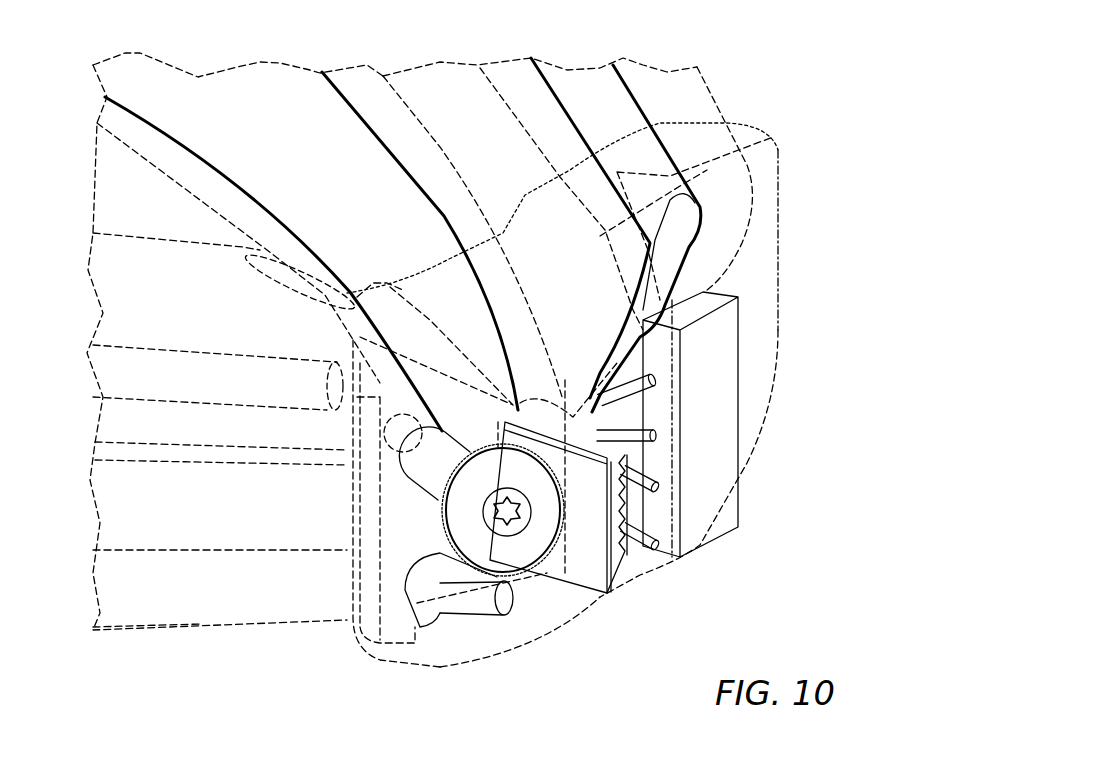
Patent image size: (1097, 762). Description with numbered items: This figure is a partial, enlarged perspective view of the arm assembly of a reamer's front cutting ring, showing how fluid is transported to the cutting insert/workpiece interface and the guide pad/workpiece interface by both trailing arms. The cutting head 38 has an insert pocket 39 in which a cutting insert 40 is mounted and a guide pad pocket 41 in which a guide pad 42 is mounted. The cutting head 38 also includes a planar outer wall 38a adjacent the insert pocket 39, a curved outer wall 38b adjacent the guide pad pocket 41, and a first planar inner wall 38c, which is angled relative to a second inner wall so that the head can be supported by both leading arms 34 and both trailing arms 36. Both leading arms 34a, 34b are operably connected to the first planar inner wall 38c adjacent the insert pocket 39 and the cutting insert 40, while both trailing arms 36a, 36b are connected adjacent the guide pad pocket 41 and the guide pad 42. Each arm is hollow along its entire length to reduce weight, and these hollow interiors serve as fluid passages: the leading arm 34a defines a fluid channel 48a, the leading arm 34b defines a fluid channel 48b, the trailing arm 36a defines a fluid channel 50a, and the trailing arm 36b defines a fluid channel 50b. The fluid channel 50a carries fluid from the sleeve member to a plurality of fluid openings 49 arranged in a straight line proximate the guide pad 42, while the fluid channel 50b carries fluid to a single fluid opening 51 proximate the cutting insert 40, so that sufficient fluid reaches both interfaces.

The leading arms 34 is at (160, 608).
The leading arm 34a is at (205, 308).
The leading arm 34b is at (243, 587).
The trailing arms 36 is at (345, 30).
The trailing arm 36a is at (607, 107).
The trailing arm 36b is at (262, 105).
The cutting head 38 is at (780, 452).
The planar outer wall 38a is at (468, 680).
The curved outer wall 38b is at (820, 366).
The first planar inner wall 38c is at (347, 450).
The insert pocket 39 is at (673, 586).
The cutting insert 40 is at (586, 572).
The guide pad pocket 41 is at (790, 342).
The guide pad 42 is at (716, 373).
The fluid channel 48a is at (150, 282).
The fluid channel 48b is at (177, 533).
The fluid openings 49 is at (654, 381).
The fluid channel 50a is at (643, 117).
The fluid channel 50b is at (400, 163).
The fluid opening 51 is at (505, 600).